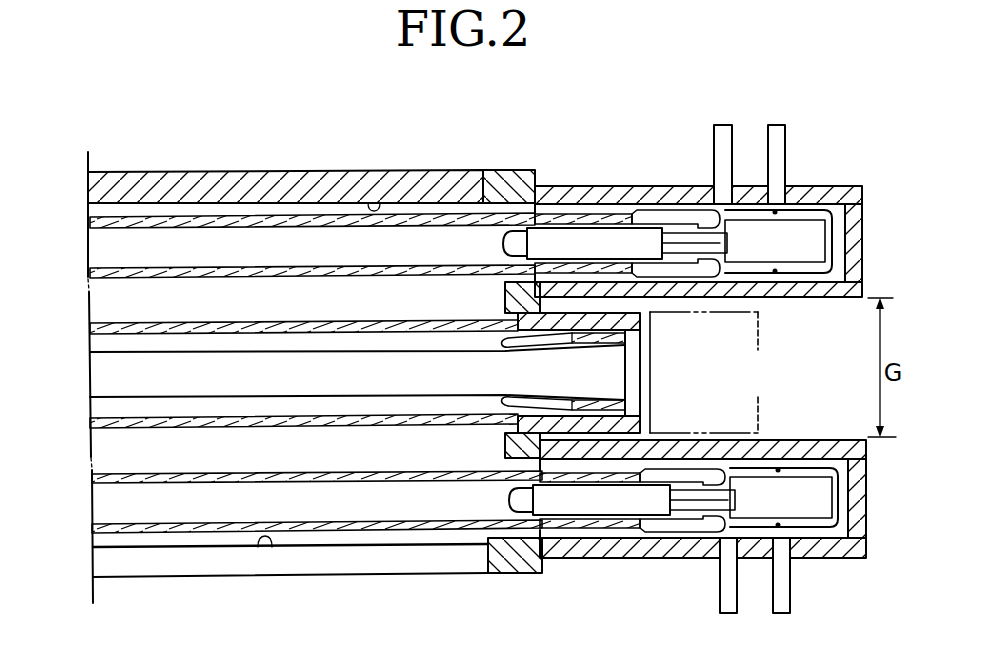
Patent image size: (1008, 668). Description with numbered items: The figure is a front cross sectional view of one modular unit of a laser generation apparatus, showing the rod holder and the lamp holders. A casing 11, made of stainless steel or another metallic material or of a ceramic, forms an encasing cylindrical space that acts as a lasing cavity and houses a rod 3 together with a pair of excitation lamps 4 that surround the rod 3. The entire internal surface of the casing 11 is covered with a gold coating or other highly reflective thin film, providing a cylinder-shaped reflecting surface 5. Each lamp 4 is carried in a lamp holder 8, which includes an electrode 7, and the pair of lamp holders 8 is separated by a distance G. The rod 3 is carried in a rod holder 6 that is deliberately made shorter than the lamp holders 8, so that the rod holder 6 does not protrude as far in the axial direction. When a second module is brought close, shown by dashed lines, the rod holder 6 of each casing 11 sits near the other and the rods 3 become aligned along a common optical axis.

The rod 3 is at (291, 352).
The excitation lamp 4 is at (306, 214).
The reflecting surface 5 is at (369, 203).
The rod holder 6 is at (598, 434).
The electrode 7 is at (503, 250).
The lamp holder 8 is at (615, 187).
The casing 11 is at (406, 170).